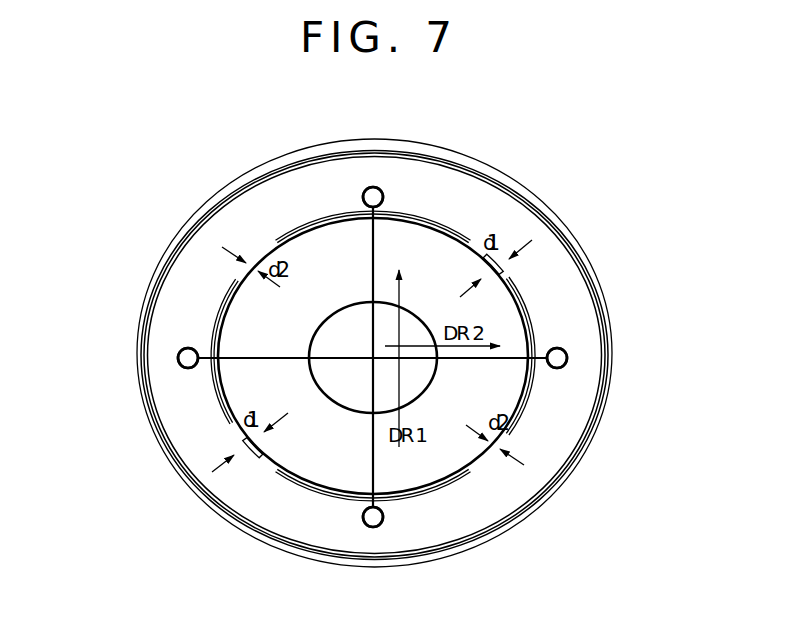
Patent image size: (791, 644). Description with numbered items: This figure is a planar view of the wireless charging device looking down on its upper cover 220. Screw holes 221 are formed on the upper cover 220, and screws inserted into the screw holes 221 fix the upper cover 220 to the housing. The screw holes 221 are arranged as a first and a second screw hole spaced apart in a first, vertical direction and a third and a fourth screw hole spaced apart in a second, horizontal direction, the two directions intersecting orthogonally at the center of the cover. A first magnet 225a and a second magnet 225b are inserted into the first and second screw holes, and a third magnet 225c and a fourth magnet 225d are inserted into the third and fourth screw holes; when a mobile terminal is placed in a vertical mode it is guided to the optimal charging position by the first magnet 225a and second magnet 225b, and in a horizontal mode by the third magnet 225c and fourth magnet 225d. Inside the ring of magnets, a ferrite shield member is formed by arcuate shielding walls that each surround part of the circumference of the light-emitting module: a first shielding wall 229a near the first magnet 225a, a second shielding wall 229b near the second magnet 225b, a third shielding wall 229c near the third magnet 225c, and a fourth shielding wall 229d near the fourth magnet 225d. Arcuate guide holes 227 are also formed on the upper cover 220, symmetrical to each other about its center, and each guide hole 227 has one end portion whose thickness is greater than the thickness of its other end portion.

The upper cover 220 is at (599, 446).
The screw holes 221 is at (386, 203).
The first magnet 225a is at (373, 187).
The second magnet 225b is at (373, 527).
The third magnet 225c is at (178, 355).
The fourth magnet 225d is at (567, 353).
The guide holes 227 is at (505, 272).
The first shielding wall 229a is at (332, 214).
The second shielding wall 229b is at (333, 500).
The third shielding wall 229c is at (213, 310).
The fourth shielding wall 229d is at (535, 312).